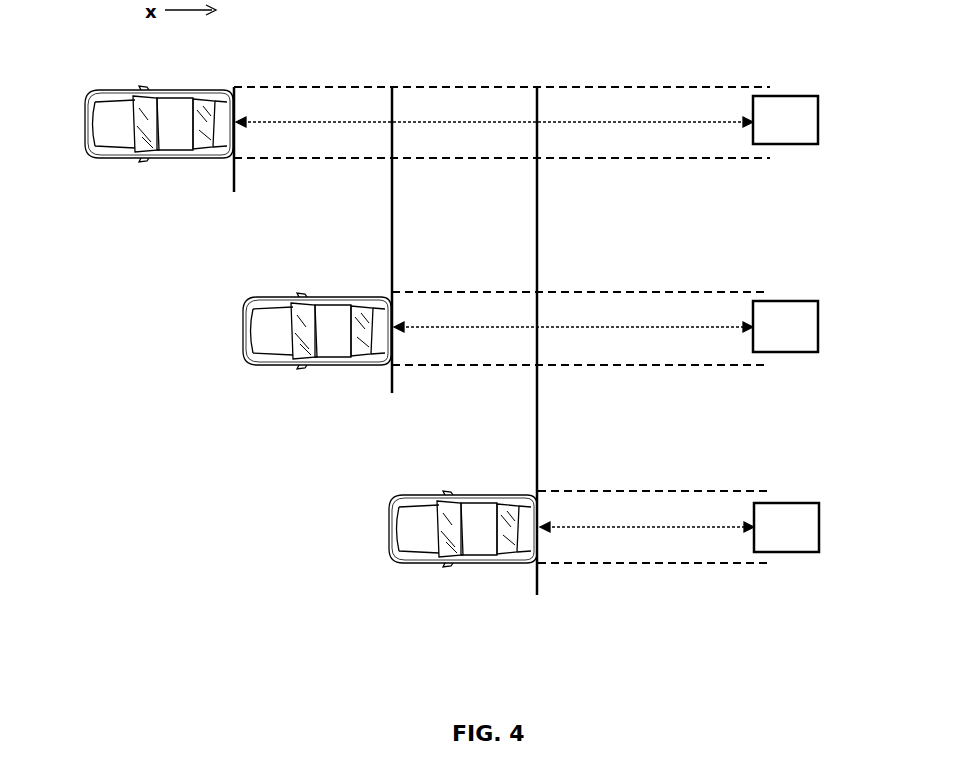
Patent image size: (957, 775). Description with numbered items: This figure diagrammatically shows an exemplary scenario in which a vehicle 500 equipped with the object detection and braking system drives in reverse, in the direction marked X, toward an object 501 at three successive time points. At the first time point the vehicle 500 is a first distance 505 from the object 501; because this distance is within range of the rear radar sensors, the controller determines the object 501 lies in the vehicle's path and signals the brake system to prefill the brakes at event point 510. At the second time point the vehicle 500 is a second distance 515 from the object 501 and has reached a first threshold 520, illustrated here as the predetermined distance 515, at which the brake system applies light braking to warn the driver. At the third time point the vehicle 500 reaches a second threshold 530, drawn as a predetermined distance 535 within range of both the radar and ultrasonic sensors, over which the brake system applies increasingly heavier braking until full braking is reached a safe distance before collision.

The vehicle 500 is at (85, 105).
The object 501 is at (806, 128).
The first distance 505 is at (299, 124).
The event point 510 is at (232, 169).
The second distance 515 is at (483, 327).
The first threshold 520 is at (388, 370).
The second threshold 530 is at (535, 562).
The predetermined distance 535 is at (637, 527).